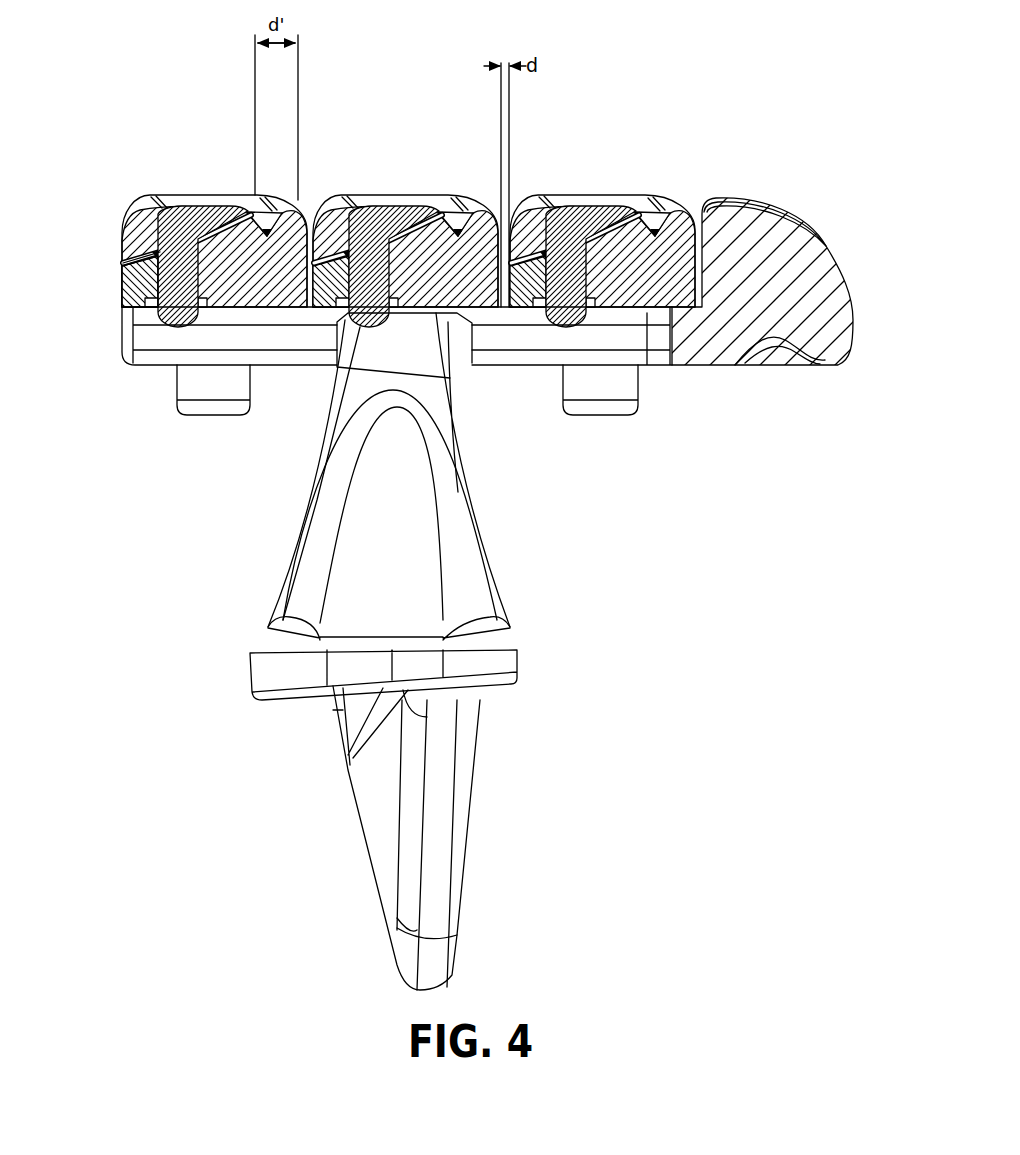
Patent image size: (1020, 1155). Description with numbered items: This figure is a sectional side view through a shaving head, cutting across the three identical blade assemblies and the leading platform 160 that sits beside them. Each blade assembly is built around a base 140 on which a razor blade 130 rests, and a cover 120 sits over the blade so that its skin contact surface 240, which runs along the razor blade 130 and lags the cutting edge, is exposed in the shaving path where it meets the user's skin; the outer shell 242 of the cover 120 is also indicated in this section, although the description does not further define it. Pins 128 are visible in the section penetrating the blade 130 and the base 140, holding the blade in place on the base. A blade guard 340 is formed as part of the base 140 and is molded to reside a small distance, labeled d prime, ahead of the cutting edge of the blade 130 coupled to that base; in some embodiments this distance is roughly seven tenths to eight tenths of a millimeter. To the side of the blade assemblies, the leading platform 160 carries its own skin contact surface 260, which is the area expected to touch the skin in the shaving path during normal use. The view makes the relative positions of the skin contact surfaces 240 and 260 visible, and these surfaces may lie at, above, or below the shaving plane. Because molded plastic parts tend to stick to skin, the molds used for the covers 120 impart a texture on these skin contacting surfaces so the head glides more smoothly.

The cover 120 is at (120, 215).
The pins 128 is at (157, 309).
The razor blade 130 is at (125, 265).
The base 140 is at (133, 283).
The leading platform 160 is at (823, 322).
The skin contact surface 240 is at (164, 198).
The outer shell 242 is at (227, 188).
The skin contact surface 260 is at (768, 205).
The blade guard 340 is at (292, 213).